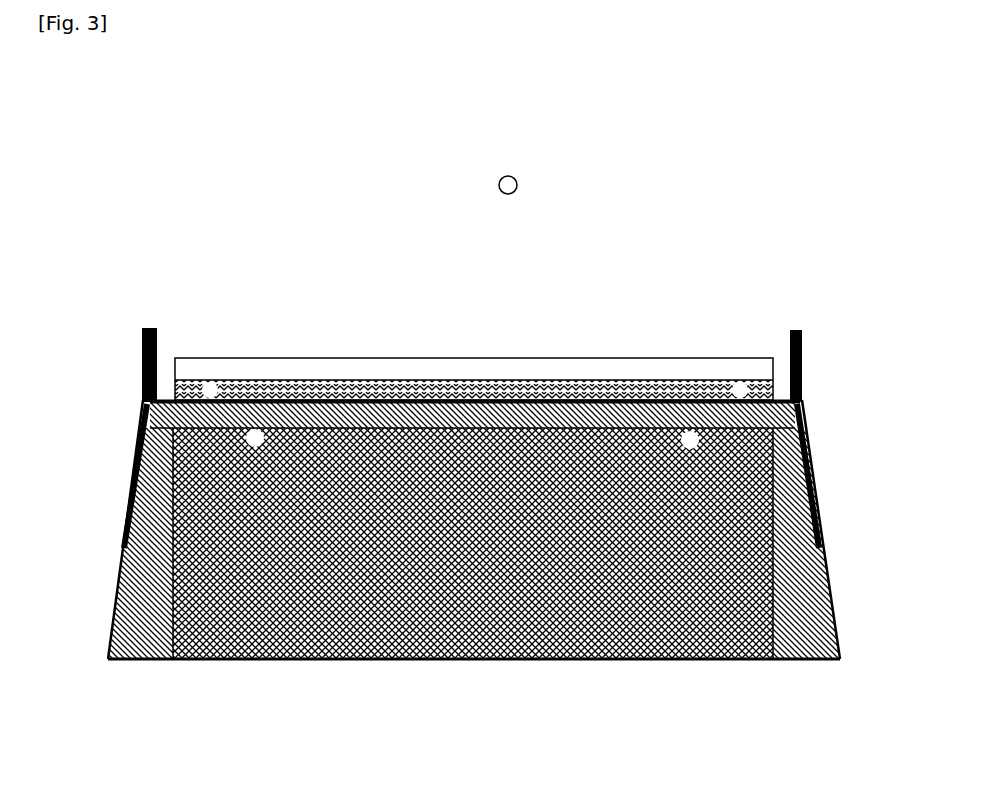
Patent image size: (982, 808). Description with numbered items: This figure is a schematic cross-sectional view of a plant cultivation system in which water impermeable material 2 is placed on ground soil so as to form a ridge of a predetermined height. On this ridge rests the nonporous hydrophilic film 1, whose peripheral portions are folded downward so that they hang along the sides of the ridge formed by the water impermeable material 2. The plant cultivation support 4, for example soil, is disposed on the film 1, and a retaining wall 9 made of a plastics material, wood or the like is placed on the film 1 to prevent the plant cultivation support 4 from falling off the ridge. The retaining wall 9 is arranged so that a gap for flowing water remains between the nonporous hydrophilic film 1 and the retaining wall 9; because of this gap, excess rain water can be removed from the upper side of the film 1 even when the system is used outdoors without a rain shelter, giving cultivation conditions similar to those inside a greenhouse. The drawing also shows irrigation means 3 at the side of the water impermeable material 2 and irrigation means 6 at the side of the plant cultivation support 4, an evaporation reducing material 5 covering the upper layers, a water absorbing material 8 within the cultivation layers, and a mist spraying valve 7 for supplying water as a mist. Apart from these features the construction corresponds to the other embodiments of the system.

The nonporous hydrophilic film 1 is at (822, 494).
The water impermeable material 2 is at (453, 566).
The irrigation means 3 is at (246, 452).
The plant cultivation support 4 is at (682, 383).
The evaporation reducing material 5 is at (518, 360).
The irrigation means 6 is at (222, 381).
The mist spraying valve 7 is at (523, 197).
The water absorbing material 8 is at (420, 432).
The retaining wall 9 is at (147, 328).